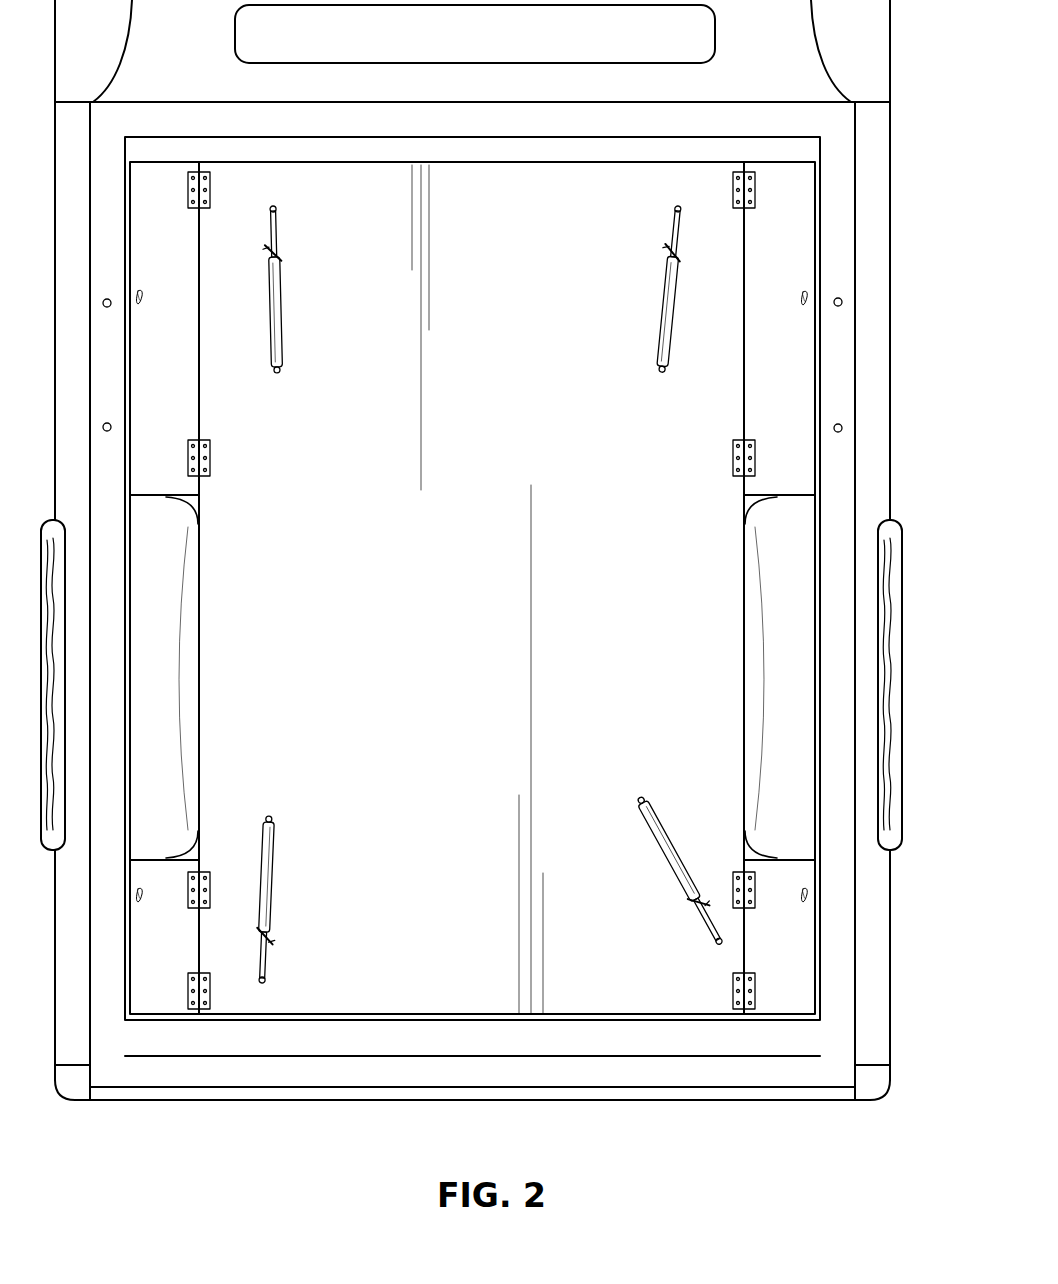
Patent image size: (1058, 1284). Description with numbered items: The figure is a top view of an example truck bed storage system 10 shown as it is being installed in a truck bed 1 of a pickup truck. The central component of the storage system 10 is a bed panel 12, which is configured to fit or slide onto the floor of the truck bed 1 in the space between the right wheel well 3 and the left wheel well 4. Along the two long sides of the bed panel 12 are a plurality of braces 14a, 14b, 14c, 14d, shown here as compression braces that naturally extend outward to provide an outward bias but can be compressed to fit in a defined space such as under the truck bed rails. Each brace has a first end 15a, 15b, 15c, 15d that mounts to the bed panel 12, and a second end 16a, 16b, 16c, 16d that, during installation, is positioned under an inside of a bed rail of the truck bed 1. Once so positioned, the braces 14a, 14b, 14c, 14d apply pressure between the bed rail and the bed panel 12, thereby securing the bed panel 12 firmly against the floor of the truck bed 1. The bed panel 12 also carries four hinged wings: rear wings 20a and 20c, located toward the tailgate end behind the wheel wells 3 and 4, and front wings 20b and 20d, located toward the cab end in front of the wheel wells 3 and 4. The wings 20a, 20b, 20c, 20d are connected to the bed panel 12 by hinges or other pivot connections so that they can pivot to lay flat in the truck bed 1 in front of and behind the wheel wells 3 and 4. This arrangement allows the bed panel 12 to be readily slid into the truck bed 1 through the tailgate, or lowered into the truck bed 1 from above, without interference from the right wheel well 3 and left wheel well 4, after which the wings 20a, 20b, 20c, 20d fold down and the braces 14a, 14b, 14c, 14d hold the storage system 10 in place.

The truck bed 1 is at (760, 1115).
The truck bed storage system 10 is at (915, 210).
The bed panel 12 is at (473, 549).
The right wheel well 3 is at (743, 665).
The left wheel well 4 is at (200, 660).
The brace 14a is at (310, 894).
The brace 14b is at (320, 289).
The brace 14c is at (642, 883).
The brace 14d is at (631, 284).
The first end 15a is at (276, 838).
The first end 15b is at (283, 350).
The first end 15c is at (646, 838).
The first end 15d is at (658, 356).
The second end 16a is at (268, 957).
The second end 16b is at (281, 220).
The second end 16c is at (703, 931).
The second end 16d is at (672, 228).
The rear wing 20a is at (200, 940).
The front wing 20b is at (200, 378).
The rear wing 20c is at (742, 930).
The front wing 20d is at (742, 365).